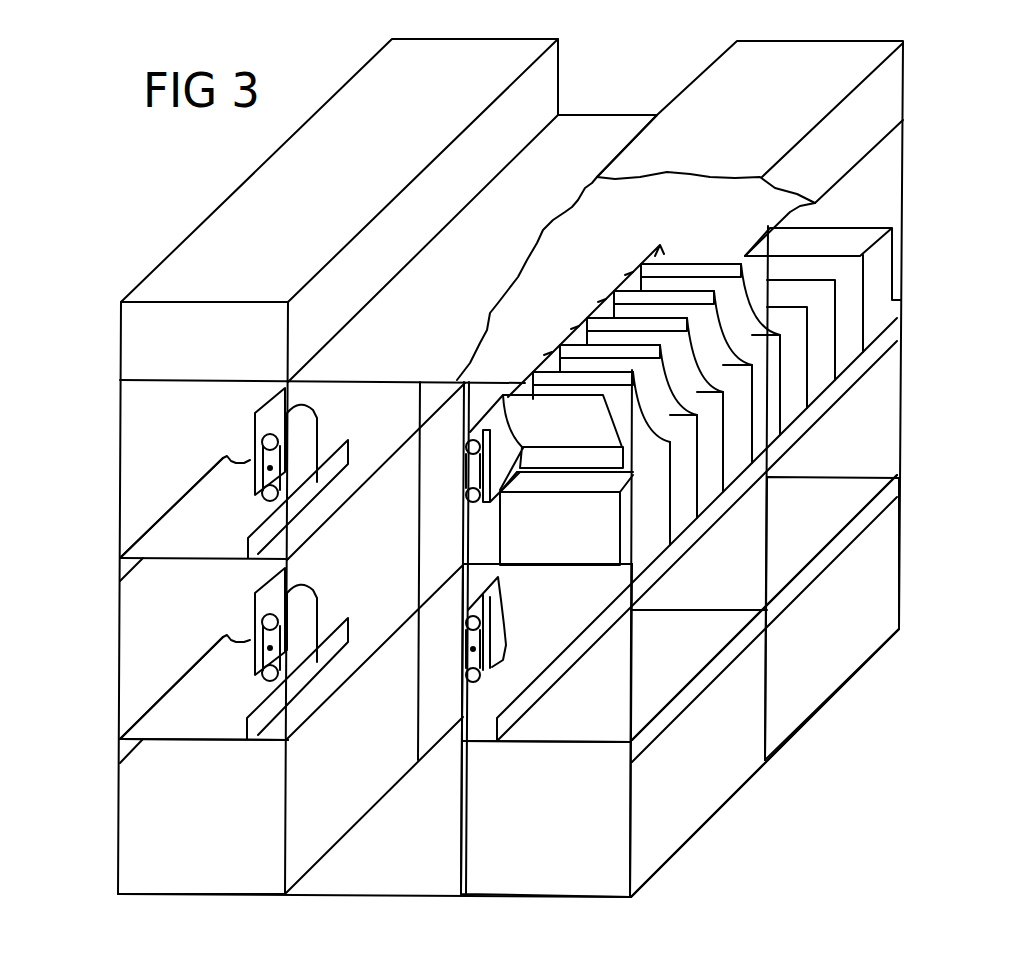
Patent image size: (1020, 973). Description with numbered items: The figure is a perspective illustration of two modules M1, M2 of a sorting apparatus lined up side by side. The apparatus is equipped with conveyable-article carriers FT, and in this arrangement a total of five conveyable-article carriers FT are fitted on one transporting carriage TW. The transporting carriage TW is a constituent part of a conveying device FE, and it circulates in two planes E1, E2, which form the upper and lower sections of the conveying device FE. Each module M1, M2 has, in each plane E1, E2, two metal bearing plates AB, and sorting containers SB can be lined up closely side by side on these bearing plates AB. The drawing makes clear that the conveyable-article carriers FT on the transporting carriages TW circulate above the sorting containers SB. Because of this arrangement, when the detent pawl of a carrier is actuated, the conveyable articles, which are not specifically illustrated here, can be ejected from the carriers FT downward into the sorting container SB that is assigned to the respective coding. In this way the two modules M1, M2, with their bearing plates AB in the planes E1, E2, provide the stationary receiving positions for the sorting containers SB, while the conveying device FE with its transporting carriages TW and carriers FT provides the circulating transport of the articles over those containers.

The sorting container SB is at (880, 254).
The conveyable-article carrier FT is at (696, 240).
The transporting carriage TW is at (597, 270).
The conveying device FE is at (237, 605).
The plane E1 is at (190, 648).
The plane E2 is at (190, 468).
The metal bearing plate AB is at (212, 723).
The module M1 is at (727, 831).
The module M2 is at (839, 723).